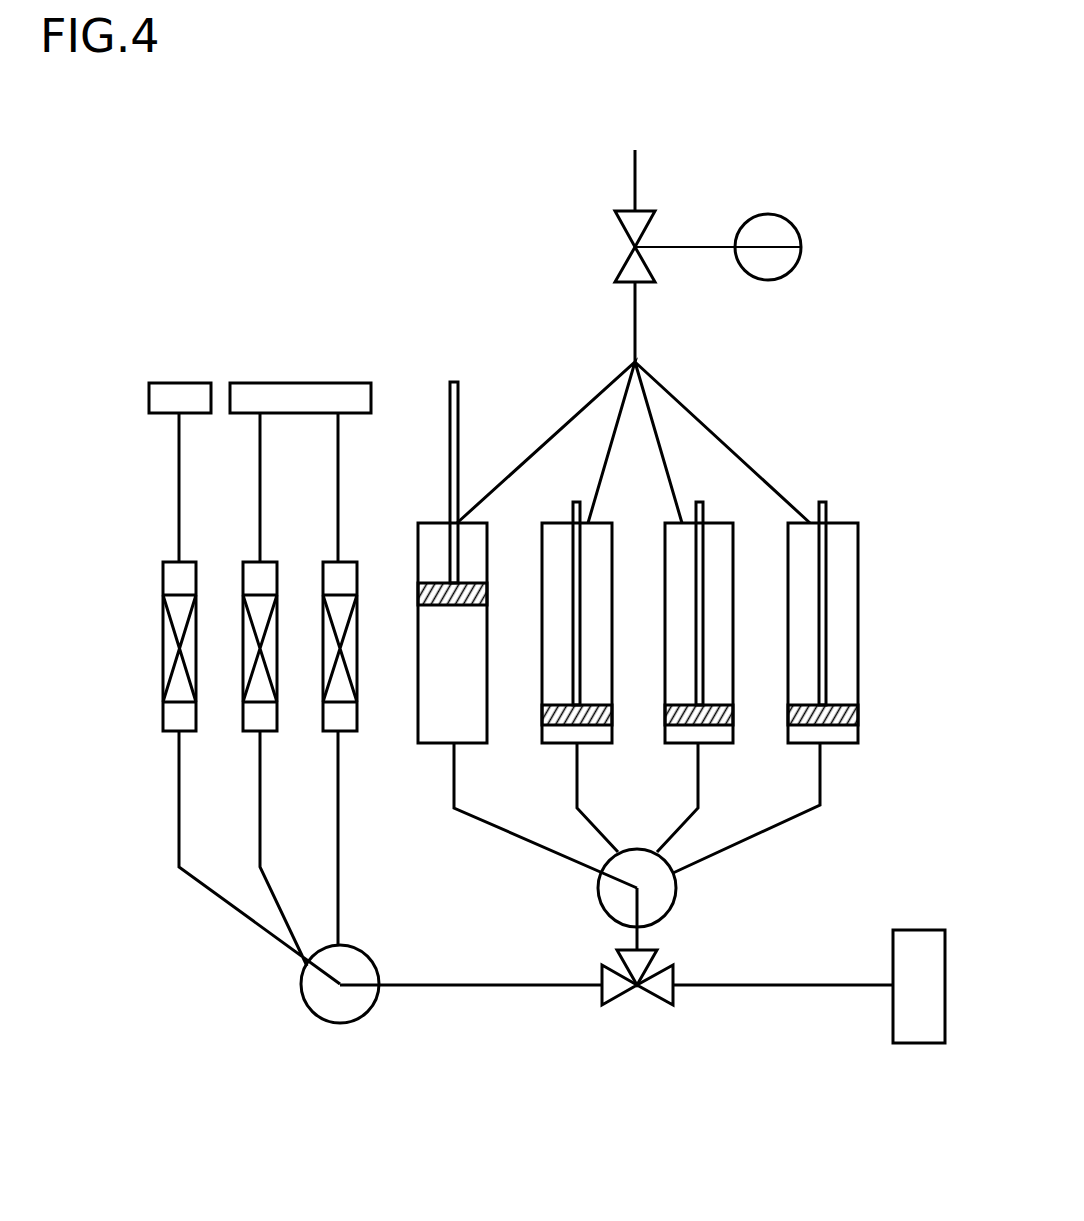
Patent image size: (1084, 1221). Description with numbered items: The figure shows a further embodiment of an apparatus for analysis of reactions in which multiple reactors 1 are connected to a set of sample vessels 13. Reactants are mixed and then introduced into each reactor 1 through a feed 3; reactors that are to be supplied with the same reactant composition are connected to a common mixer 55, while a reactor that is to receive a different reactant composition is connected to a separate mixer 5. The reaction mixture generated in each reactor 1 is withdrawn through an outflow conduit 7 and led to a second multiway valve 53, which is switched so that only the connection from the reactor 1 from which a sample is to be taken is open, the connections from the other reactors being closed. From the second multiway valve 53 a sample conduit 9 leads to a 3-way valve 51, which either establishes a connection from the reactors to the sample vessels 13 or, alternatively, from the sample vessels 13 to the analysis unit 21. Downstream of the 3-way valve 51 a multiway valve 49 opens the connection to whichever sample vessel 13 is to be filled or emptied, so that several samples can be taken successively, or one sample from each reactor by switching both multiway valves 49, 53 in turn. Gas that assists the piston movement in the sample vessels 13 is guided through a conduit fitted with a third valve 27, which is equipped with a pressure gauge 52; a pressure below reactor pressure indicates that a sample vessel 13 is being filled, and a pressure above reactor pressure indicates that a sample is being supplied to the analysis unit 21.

The reactor 1 is at (163, 635).
The feed 3 is at (178, 485).
The mixer 5 is at (175, 383).
The outflow conduit 7 is at (247, 922).
The sample conduit 9 is at (469, 987).
The sample vessel 13 is at (420, 523).
The analysis unit 21 is at (922, 930).
The third valve 27 is at (617, 222).
The multiway valve 49 is at (673, 908).
The 3-way valve 51 is at (615, 1005).
The pressure gauge 52 is at (797, 226).
The second multiway valve 53 is at (330, 1022).
The common mixer 55 is at (335, 383).